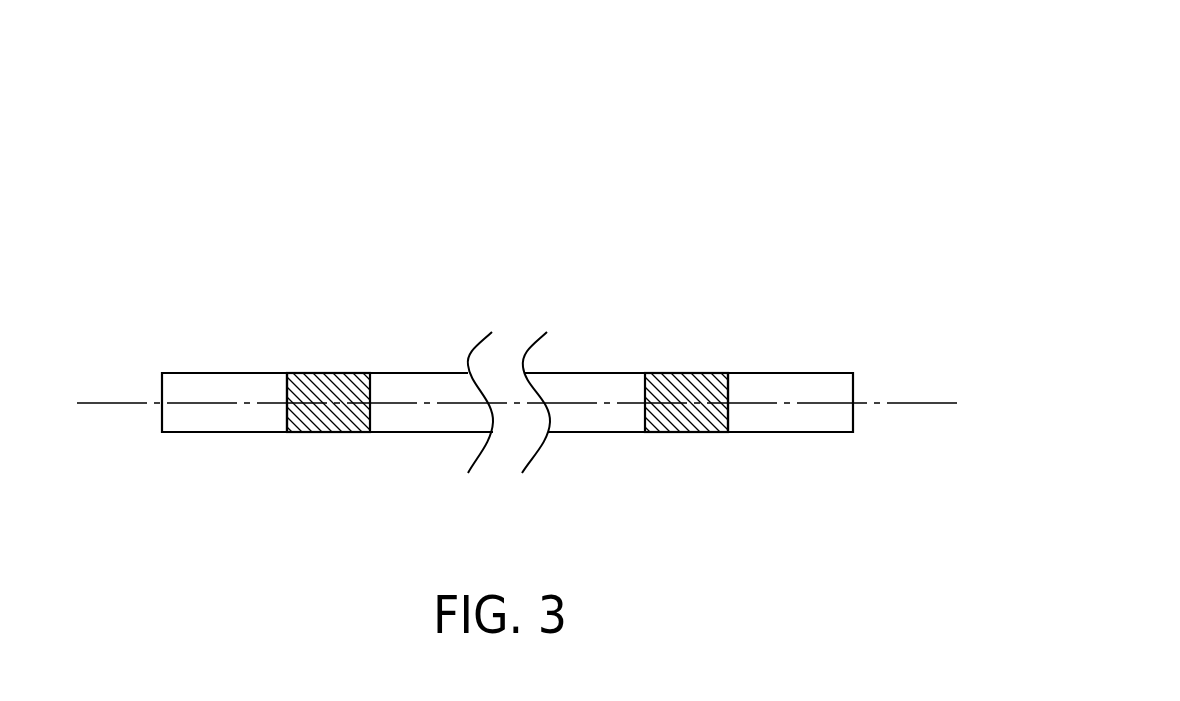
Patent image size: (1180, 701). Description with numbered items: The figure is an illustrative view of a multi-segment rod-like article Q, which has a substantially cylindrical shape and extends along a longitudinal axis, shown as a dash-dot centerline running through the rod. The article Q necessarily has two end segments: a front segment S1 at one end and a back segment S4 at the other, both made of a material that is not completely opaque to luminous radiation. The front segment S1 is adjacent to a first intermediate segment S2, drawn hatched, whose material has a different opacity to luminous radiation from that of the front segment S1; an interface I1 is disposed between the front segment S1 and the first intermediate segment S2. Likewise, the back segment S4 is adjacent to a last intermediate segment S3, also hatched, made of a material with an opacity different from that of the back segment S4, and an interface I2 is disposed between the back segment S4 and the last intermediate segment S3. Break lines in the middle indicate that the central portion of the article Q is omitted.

The article Q is at (890, 155).
The front segment S1 is at (200, 390).
The first intermediate segment S2 is at (328, 383).
The last intermediate segment S3 is at (680, 385).
The back segment S4 is at (788, 388).
The interface I1 is at (287, 400).
The interface I2 is at (728, 415).